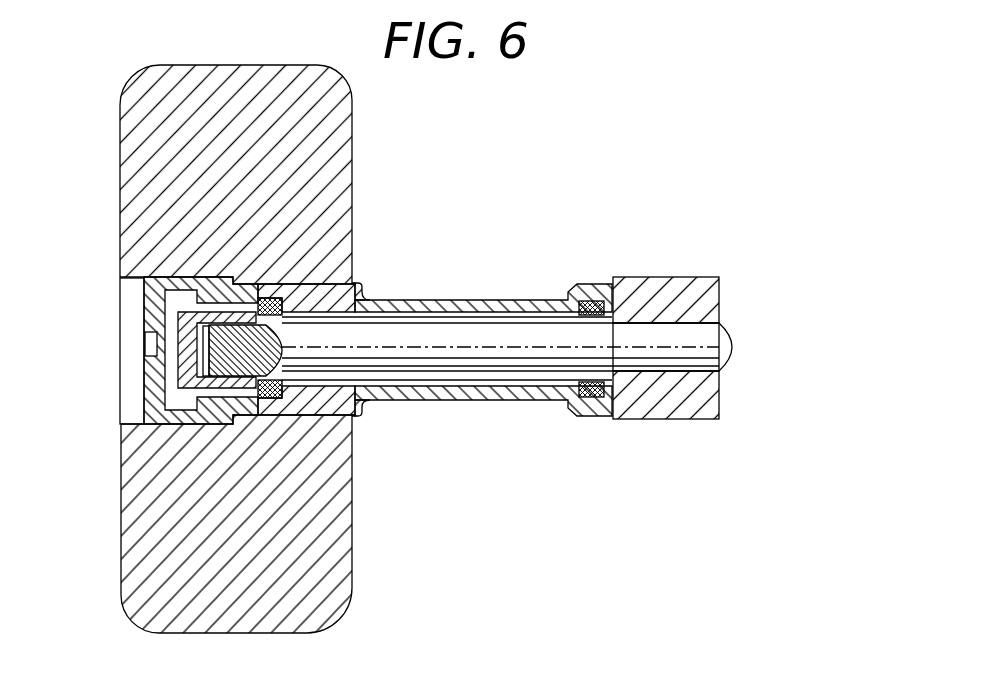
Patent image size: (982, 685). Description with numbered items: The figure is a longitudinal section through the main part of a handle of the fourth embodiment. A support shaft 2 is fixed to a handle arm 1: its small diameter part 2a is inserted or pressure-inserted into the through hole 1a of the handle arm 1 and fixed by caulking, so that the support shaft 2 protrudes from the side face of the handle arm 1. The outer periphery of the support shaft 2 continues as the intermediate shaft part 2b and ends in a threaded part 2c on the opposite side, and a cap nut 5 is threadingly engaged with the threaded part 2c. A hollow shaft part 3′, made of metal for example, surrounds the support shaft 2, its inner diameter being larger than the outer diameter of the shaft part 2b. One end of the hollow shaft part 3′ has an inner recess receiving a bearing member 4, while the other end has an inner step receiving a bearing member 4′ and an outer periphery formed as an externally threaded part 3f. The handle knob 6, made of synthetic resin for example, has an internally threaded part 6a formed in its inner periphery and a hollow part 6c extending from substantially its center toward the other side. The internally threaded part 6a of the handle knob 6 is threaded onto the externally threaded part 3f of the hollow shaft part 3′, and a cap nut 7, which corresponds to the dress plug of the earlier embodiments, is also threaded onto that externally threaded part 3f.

The handle arm 1 is at (681, 270).
The through hole 1a is at (707, 362).
The support shaft 2 is at (433, 310).
The small diameter part 2a is at (702, 335).
The shaft part 2b is at (399, 330).
The threaded part 2c is at (165, 399).
The hollow shaft part 3′ is at (474, 292).
The externally threaded part 3f is at (262, 283).
The bearing member 4 is at (601, 416).
The bearing member 4′ is at (268, 392).
The cap nut 5 is at (203, 332).
The handle knob 6 is at (359, 118).
The internally threaded part 6a is at (358, 416).
The hollow part 6c is at (147, 283).
The cap nut 7 is at (165, 302).